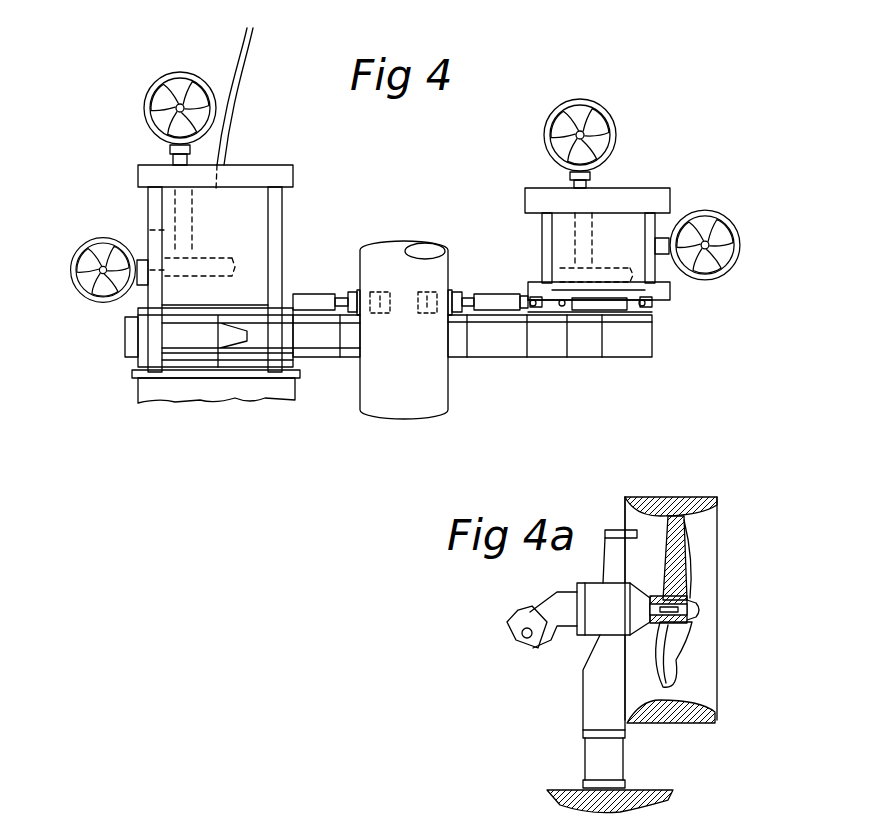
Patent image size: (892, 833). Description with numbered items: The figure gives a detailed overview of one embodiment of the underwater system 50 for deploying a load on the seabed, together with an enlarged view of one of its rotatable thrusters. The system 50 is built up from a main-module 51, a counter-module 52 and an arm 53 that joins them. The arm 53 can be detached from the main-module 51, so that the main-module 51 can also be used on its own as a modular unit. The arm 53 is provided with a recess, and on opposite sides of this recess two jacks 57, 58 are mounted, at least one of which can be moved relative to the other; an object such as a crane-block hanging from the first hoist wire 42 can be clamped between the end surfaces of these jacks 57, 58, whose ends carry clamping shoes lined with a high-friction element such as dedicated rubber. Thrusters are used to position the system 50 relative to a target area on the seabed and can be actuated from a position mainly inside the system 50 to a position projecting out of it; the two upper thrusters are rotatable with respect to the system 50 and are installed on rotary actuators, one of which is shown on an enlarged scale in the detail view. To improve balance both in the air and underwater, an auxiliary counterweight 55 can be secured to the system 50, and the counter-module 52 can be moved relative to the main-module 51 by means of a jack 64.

The first hoist wire 42 is at (398, 388).
The underwater system 50 is at (457, 202).
The main-module 51 is at (245, 168).
The counter-module 52 is at (651, 190).
The arm 53 is at (488, 350).
The auxiliary counterweight 55 is at (142, 339).
The jack 57 is at (325, 298).
The jack 58 is at (498, 302).
The jack 64 is at (640, 302).